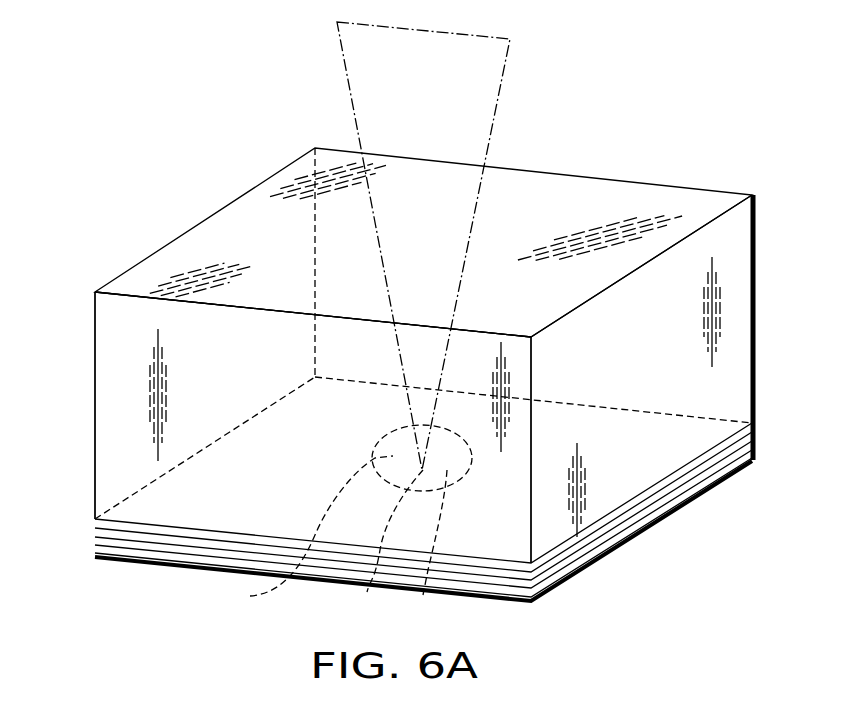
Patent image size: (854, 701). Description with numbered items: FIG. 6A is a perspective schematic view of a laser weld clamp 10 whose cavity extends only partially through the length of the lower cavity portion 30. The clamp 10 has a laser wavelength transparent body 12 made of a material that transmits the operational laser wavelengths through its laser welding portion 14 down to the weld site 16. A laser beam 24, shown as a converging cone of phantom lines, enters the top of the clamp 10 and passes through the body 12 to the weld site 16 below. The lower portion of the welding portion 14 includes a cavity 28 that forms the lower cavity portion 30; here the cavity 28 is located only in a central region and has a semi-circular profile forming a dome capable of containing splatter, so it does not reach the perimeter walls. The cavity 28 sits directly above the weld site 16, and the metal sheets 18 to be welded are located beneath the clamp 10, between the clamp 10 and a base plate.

The laser weld clamp 10 is at (663, 117).
The laser wavelength transparent body 12 is at (118, 403).
The laser welding portion 14 is at (508, 505).
The weld site 16 is at (367, 592).
The metal sheets 18 is at (582, 563).
The laser beam 24 is at (493, 127).
The cavity 28 is at (307, 532).
The lower cavity portion 30 is at (422, 526).